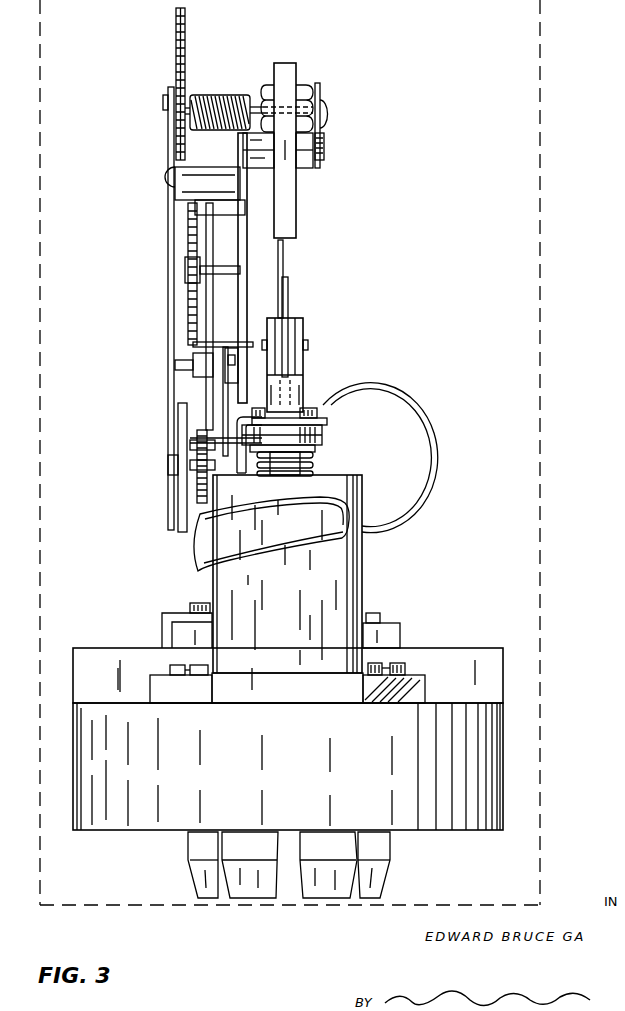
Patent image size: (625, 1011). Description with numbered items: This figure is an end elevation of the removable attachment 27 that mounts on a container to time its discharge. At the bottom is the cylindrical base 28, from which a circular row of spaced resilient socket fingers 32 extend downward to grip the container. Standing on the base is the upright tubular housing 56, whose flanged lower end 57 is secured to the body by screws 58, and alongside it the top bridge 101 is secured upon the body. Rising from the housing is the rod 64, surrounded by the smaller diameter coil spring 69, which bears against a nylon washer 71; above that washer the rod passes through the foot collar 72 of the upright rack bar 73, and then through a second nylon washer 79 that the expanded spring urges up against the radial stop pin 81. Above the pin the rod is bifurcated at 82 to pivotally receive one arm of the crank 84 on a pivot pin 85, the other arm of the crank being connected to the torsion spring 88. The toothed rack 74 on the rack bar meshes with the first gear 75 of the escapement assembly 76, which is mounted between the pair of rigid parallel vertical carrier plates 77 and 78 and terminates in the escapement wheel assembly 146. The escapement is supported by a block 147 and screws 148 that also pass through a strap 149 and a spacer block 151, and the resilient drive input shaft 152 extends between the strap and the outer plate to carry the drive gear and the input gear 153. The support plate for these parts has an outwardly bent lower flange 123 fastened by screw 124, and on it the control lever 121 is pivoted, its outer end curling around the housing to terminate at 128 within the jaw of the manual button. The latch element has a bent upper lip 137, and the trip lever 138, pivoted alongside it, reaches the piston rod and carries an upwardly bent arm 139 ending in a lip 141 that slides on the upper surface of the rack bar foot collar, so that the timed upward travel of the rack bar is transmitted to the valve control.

The attachment 27 is at (548, 593).
The cylindrical base 28 is at (444, 818).
The socket fingers 32 is at (258, 898).
The tubular housing 56 is at (360, 578).
The flanged lower end 57 is at (424, 694).
The screws 58 is at (406, 664).
The rod 64 is at (303, 400).
The coil spring 69 is at (312, 458).
The nylon washer 71 is at (323, 442).
The foot collar 72 is at (326, 435).
The rack bar 73 is at (278, 272).
The toothed rack 74 is at (285, 73).
The first gear 75 is at (305, 85).
The escapement assembly 76 is at (181, 239).
The carrier plate 77 is at (243, 266).
The carrier plate 78 is at (170, 328).
The nylon washer 79 is at (328, 421).
The stop pin 81 is at (320, 410).
The bifurcated portion 82 is at (300, 325).
The crank 84 is at (291, 300).
The pivot pin 85 is at (309, 345).
The torsion spring 88 is at (394, 458).
The top bridge 101 is at (388, 640).
The control lever 121 is at (200, 572).
The flange 123 is at (170, 620).
The screw 124 is at (198, 604).
The lever end 128 is at (288, 530).
The bent upper lip 137 is at (232, 343).
The trip lever 138 is at (238, 478).
The upwardly bent arm 139 is at (258, 440).
The lip 141 is at (292, 392).
The escapement wheel assembly 146 is at (195, 486).
The block 147 is at (257, 160).
The screws 148 is at (325, 155).
The strap 149 is at (320, 91).
The spacer block 151 is at (305, 160).
The drive input shaft 152 is at (215, 92).
The input gear 153 is at (185, 54).